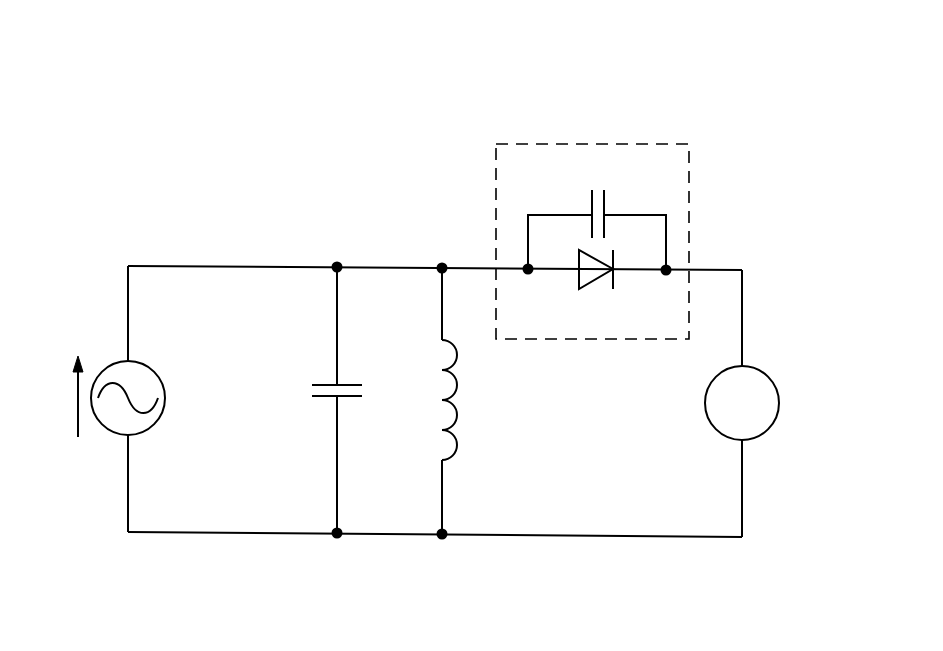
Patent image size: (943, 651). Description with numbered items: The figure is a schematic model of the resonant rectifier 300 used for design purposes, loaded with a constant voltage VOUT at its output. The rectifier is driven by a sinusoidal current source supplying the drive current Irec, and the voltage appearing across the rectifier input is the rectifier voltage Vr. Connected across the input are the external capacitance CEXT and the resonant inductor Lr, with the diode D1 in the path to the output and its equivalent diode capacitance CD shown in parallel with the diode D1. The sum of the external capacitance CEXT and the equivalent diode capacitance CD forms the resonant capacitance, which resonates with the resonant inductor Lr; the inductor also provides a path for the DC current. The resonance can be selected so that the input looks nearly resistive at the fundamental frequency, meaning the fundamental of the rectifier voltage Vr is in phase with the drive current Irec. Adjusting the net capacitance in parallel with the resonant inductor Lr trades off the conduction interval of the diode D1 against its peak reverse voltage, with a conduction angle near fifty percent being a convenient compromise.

The resonant rectifier 300 is at (386, 86).
The drive current Irec is at (140, 396).
The rectifier voltage Vr is at (269, 396).
The external capacitance CEXT is at (363, 399).
The resonant inductor Lr is at (468, 400).
The diode D1 is at (596, 287).
The equivalent diode capacitance CD is at (597, 217).
The constant output voltage VOUT is at (769, 403).